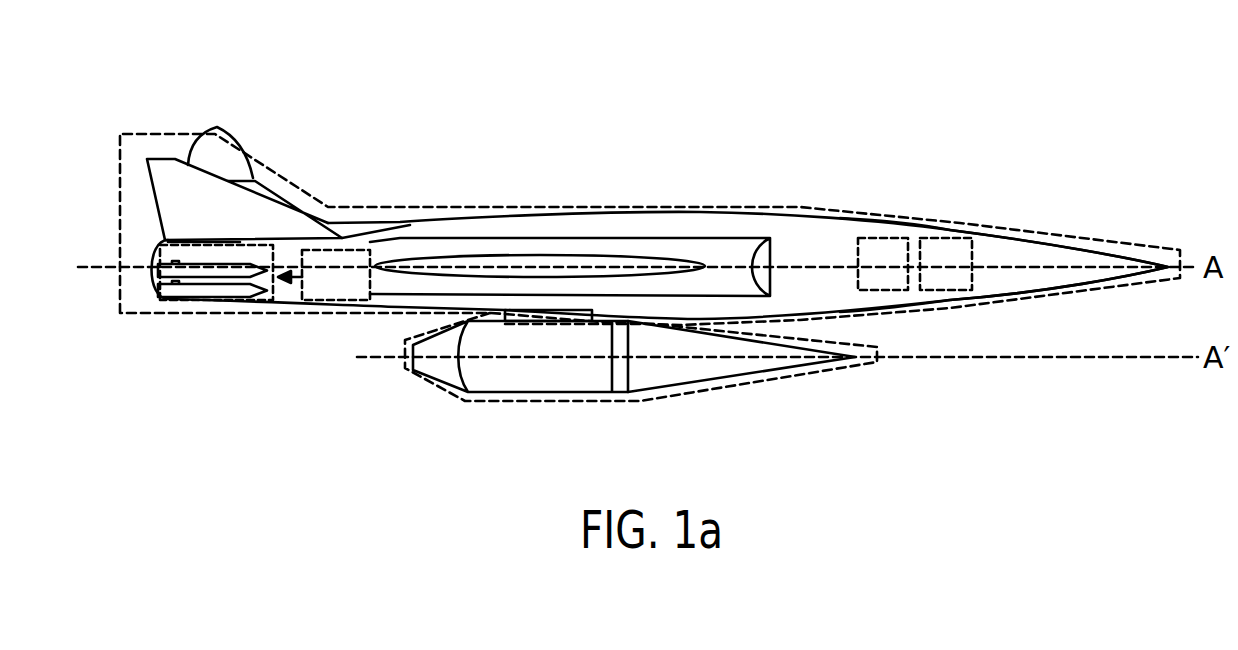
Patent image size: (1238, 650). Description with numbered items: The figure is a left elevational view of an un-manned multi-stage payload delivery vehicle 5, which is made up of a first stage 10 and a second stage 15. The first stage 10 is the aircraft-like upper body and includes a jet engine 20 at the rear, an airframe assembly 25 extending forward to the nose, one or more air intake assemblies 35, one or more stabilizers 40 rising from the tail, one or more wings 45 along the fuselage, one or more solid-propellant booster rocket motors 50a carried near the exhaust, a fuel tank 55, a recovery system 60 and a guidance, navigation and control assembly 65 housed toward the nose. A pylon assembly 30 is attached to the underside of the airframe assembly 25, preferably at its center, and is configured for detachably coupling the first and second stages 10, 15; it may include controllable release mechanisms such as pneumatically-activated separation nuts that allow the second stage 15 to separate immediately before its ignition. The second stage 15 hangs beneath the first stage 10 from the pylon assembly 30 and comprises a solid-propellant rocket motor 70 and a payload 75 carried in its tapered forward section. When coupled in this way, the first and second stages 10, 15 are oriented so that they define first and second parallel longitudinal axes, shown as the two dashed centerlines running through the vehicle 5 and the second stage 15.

The un-manned multi-stage payload delivery vehicle 5 is at (528, 98).
The first stage 10 is at (438, 205).
The second stage 15 is at (465, 400).
The jet engine 20 is at (183, 255).
The airframe assembly 25 is at (807, 232).
The pylon assembly 30 is at (508, 315).
The air intake assembly 35 is at (727, 250).
The stabilizer 40 is at (217, 129).
The wing 45 is at (485, 267).
The solid-propellant booster rocket motor 50a is at (197, 290).
The fuel tank 55 is at (324, 275).
The recovery system 60 is at (883, 264).
The guidance, navigation and control (GNC) assembly 65 is at (946, 264).
The solid-propellant rocket motor 70 is at (560, 380).
The payload 75 is at (698, 368).